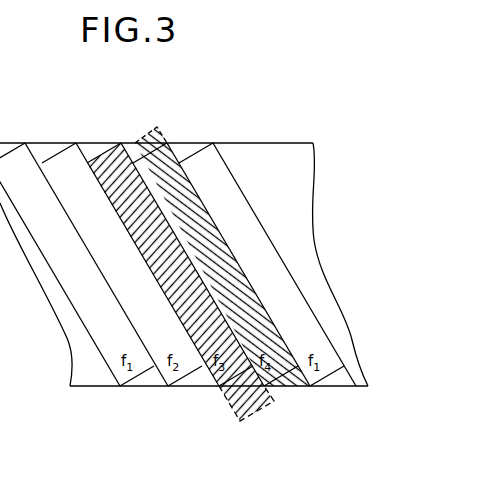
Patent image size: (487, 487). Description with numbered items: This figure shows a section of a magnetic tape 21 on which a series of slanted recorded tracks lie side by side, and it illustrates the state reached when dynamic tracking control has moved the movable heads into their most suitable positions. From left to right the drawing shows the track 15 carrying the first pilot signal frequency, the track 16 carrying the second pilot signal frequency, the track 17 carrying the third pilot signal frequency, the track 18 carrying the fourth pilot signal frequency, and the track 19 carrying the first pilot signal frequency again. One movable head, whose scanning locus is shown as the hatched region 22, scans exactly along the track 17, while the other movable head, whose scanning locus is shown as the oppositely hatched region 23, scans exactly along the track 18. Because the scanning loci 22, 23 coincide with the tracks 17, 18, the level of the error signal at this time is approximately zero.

The track 15 is at (133, 387).
The track 16 is at (182, 387).
The track 17 is at (238, 421).
The track 18 is at (279, 387).
The track 19 is at (330, 387).
The magnetic tape 21 is at (96, 382).
The scanning locus 22 is at (105, 177).
The scanning locus 23 is at (166, 141).